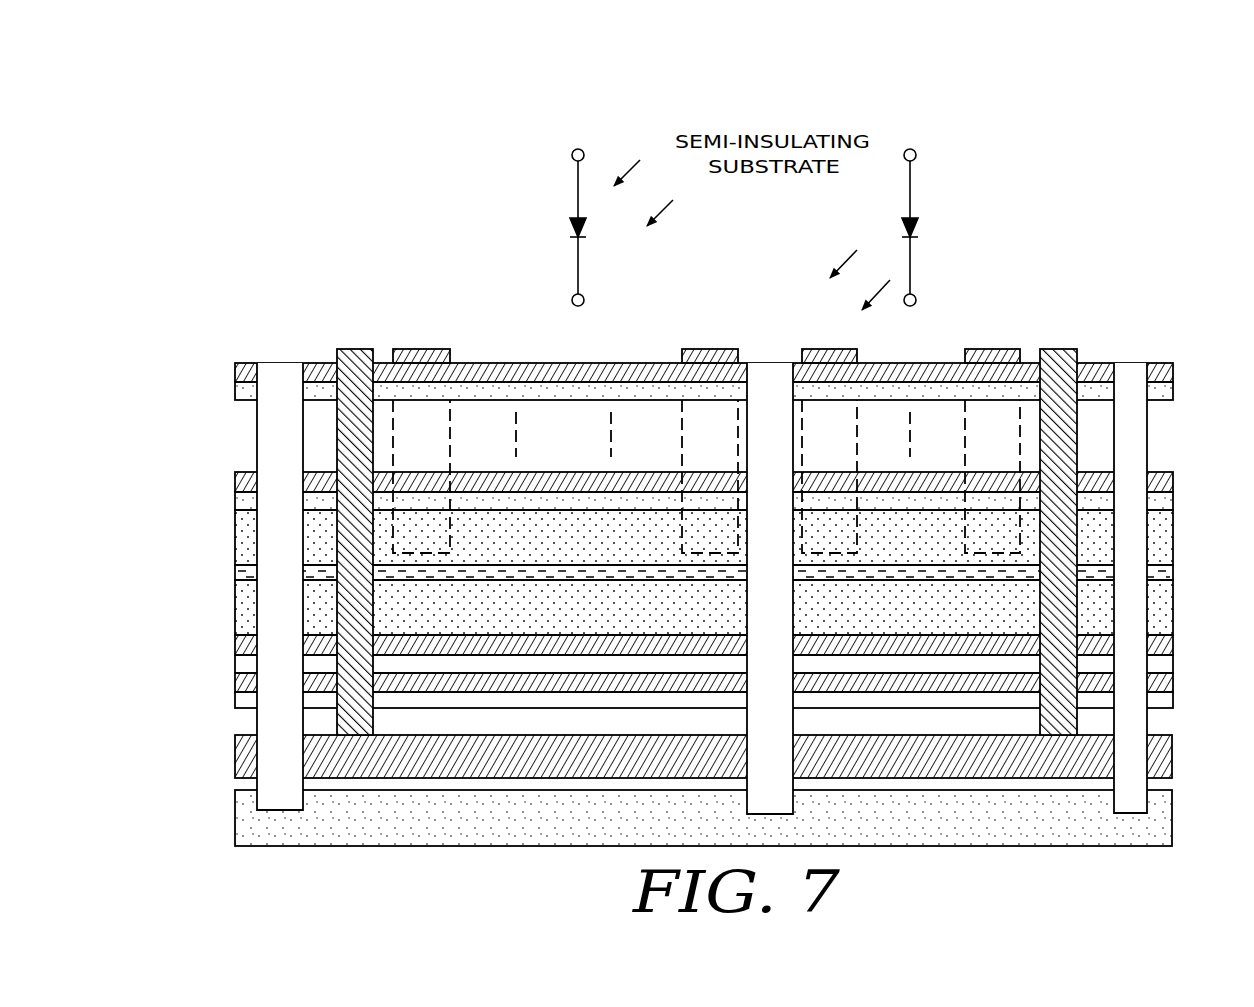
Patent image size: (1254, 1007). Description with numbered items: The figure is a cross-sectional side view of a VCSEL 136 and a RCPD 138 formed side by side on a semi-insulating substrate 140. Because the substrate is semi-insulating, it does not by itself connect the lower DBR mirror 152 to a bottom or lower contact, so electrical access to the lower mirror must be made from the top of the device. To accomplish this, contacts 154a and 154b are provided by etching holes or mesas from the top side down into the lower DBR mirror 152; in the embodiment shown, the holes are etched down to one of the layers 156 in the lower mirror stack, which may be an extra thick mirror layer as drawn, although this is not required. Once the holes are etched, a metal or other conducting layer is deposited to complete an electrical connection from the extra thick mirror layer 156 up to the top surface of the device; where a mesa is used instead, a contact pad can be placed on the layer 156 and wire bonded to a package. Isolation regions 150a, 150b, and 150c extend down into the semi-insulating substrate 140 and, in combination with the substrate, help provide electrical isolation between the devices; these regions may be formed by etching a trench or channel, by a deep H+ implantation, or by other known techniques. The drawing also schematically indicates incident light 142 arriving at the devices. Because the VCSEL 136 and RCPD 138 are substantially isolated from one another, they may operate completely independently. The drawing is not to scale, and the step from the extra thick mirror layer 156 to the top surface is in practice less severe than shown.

The VCSEL 136 is at (986, 306).
The RCPD 138 is at (455, 272).
The semi-insulating substrate 140 is at (333, 832).
The incident light / photodiode representation 142 is at (605, 122).
The isolation region 150a is at (277, 662).
The isolation region 150b is at (782, 793).
The isolation region 150c is at (1128, 802).
The lower DBR mirror 152 is at (1180, 645).
The contact 154a is at (352, 354).
The contact 154b is at (1056, 357).
The extra thick mirror layer 156 is at (469, 766).